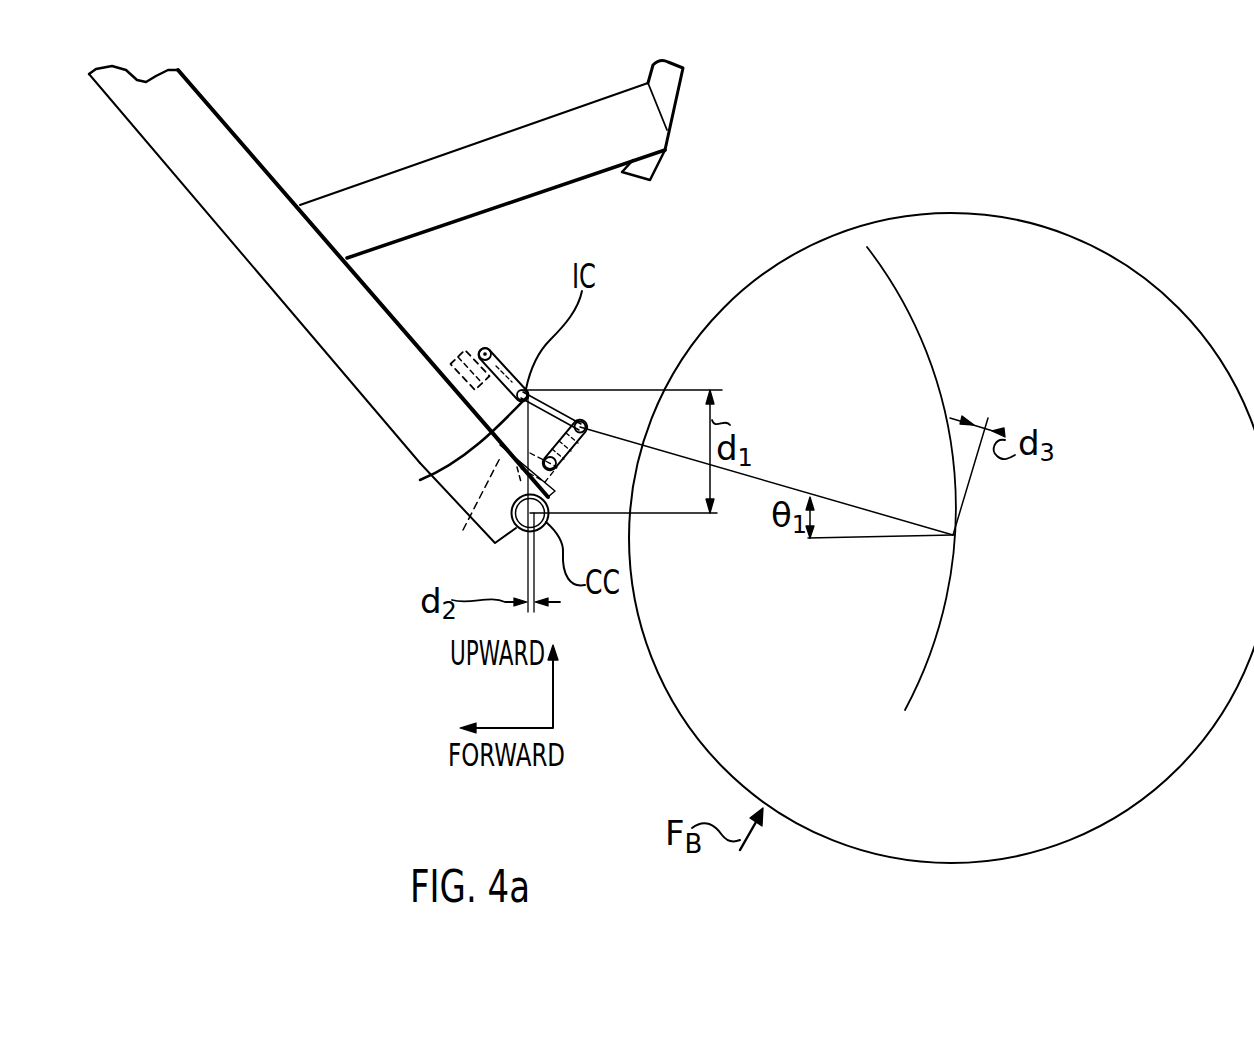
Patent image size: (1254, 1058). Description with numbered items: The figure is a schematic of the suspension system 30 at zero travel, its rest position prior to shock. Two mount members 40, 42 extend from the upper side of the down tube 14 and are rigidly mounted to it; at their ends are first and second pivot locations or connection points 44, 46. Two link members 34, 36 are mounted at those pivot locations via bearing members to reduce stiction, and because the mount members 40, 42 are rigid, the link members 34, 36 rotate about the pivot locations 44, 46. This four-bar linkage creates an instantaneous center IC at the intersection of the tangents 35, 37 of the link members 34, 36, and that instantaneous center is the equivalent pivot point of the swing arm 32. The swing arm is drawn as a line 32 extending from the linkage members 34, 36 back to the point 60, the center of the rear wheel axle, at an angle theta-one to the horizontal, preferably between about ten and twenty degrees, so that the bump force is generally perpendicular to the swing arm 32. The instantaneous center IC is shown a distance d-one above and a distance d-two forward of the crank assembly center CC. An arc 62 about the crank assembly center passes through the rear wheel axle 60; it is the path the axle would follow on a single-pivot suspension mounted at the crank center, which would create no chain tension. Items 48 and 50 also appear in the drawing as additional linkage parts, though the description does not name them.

The down tube 14 is at (410, 400).
The suspension system 30 is at (668, 278).
The swing arm 32 is at (795, 492).
The link member 34 is at (507, 372).
The tangent 35 is at (543, 402).
The link member 36 is at (560, 452).
The tangent 37 is at (562, 389).
The mount member 40 is at (475, 518).
The mount member 42 is at (458, 360).
The pivot location 44 is at (485, 348).
The pivot location 46 is at (552, 476).
The curved arm 48 is at (420, 480).
The link pivot 50 is at (586, 425).
The rear wheel axle 60 is at (953, 535).
The arc 62 is at (927, 350).